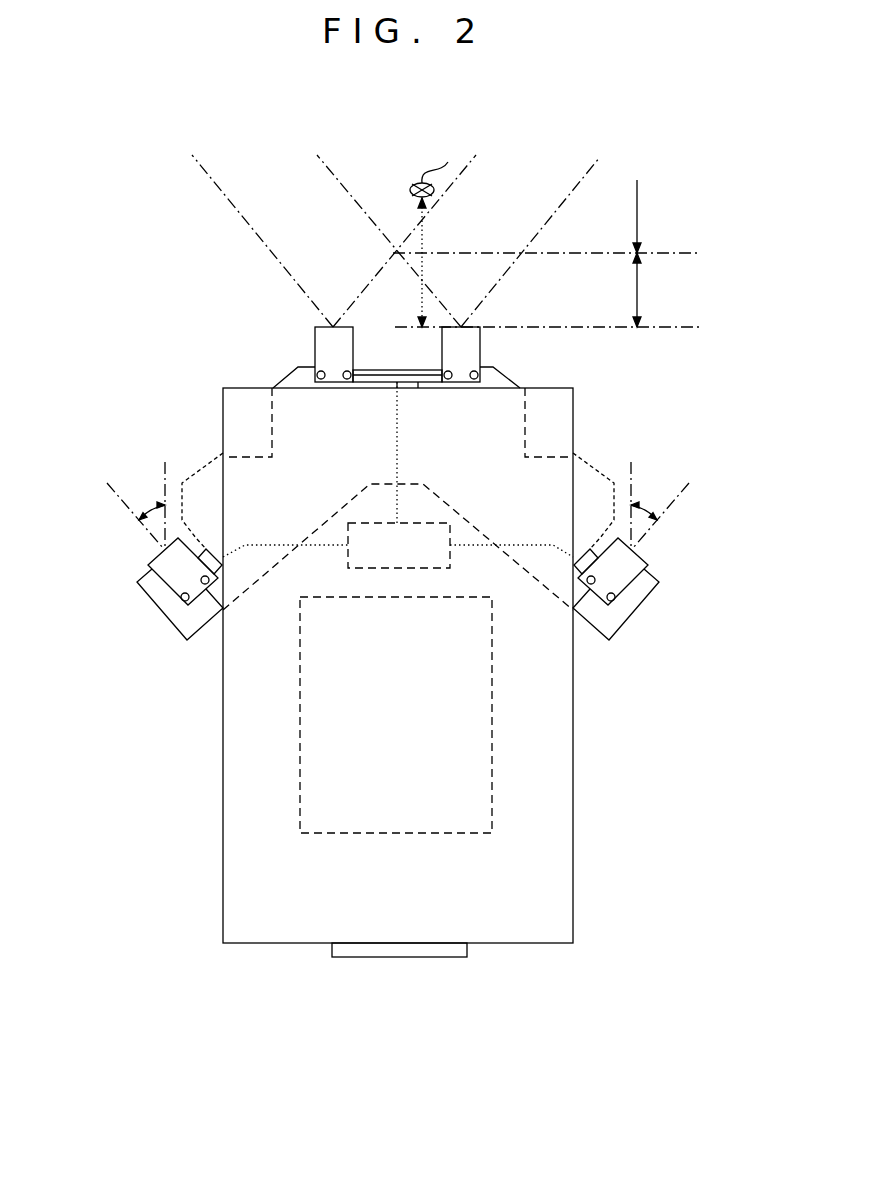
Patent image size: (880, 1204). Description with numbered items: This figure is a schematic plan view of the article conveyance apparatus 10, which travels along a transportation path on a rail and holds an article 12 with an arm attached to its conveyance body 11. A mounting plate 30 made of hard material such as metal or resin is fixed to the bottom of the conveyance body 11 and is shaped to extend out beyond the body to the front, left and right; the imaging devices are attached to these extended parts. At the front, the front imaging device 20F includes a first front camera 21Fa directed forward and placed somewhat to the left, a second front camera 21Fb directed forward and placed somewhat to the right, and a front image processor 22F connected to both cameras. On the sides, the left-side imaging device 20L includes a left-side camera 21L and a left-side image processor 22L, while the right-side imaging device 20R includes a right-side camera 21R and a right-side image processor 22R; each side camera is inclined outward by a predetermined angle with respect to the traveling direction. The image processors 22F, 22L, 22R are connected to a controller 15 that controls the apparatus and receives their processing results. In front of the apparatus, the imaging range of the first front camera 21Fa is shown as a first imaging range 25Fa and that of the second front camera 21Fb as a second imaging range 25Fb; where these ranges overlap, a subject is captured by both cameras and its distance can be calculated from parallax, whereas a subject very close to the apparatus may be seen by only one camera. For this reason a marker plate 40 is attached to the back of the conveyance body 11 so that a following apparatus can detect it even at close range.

The article conveyance apparatus 10 is at (398, 597).
The conveyance body 11 is at (573, 740).
The article 12 is at (495, 625).
The controller 15 is at (450, 553).
The front imaging device 20F is at (385, 289).
The left-side imaging device 20L is at (142, 589).
The right-side imaging device 20R is at (653, 562).
The first front camera 21Fa is at (315, 357).
The second front camera 21Fb is at (480, 342).
The left-side camera 21L is at (163, 590).
The right-side camera 21R is at (628, 588).
The front image processor 22F is at (420, 383).
The left-side image processor 22L is at (217, 557).
The right-side image processor 22R is at (579, 557).
The first imaging range 25Fa is at (245, 223).
The second imaging range 25Fb is at (567, 195).
The mounting plate 30 is at (200, 629).
The marker plate 40 is at (408, 957).